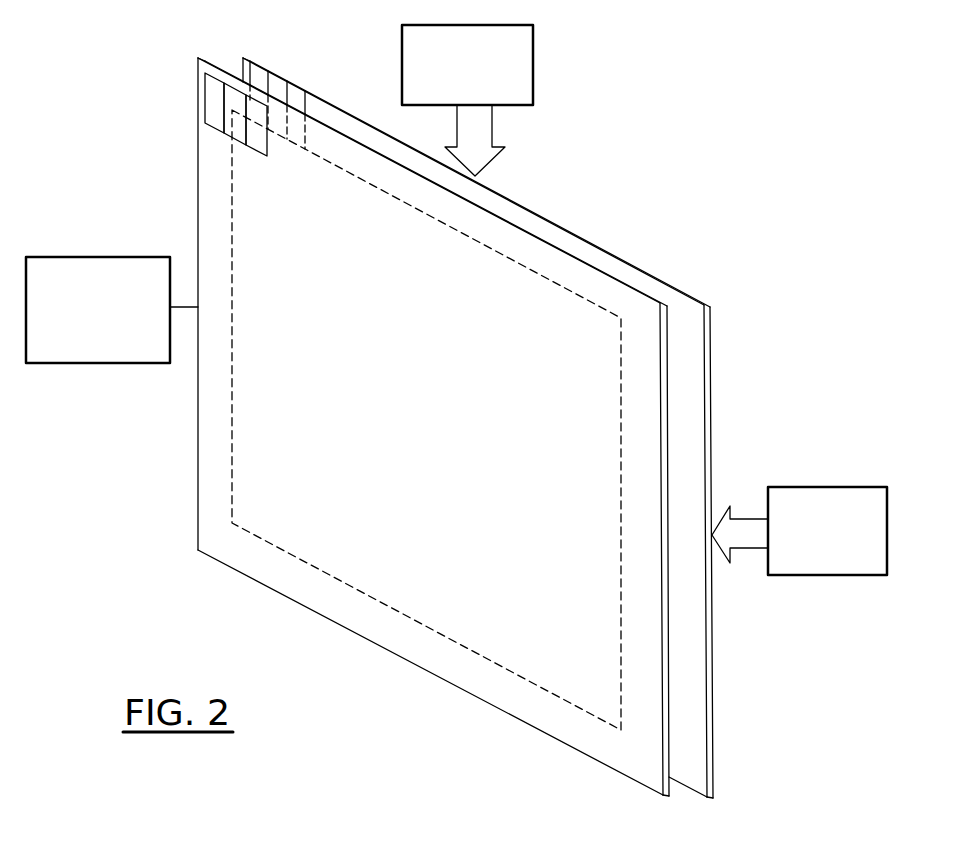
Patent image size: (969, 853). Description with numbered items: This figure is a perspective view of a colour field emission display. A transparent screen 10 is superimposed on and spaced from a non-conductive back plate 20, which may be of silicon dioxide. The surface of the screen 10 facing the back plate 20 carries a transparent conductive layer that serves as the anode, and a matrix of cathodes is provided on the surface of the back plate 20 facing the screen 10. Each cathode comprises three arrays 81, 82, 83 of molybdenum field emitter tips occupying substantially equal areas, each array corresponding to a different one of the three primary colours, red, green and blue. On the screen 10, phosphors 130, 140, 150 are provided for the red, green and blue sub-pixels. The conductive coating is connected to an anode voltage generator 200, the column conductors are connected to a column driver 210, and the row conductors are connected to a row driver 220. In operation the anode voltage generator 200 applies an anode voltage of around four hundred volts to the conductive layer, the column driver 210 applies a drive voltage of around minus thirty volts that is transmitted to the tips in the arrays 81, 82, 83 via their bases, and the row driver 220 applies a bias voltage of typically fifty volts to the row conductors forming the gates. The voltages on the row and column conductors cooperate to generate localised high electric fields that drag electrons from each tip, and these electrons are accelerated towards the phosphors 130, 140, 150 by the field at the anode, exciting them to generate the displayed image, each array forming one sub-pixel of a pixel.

The transparent screen 10 is at (424, 434).
The back plate 20 is at (697, 617).
The array of field emitter tips 81 is at (268, 68).
The array of field emitter tips 82 is at (284, 79).
The array of field emitter tips 83 is at (308, 90).
The phosphor 130 is at (215, 127).
The phosphor 140 is at (231, 139).
The phosphor 150 is at (255, 150).
The anode voltage generator 200 is at (128, 363).
The column driver 210 is at (820, 487).
The row driver 220 is at (533, 74).